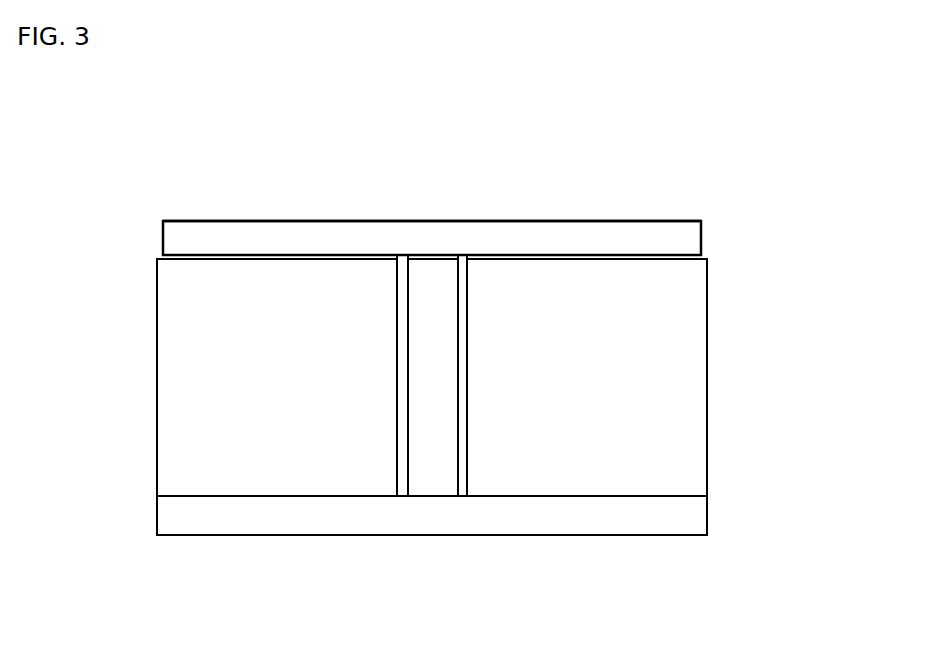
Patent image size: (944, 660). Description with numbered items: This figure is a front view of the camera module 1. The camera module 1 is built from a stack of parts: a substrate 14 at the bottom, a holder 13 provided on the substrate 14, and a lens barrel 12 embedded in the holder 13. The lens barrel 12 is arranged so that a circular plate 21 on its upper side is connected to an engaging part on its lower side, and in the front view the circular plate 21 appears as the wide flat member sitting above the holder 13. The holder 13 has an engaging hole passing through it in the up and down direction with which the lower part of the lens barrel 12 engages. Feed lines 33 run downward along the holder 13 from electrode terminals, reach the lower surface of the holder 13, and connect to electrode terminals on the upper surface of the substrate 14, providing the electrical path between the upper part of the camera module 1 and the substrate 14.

The camera module 1 is at (246, 143).
The lens barrel 12 is at (357, 217).
The circular plate 21 is at (628, 233).
The holder 13 is at (695, 322).
The substrate 14 is at (695, 513).
The feed lines 33 is at (464, 488).